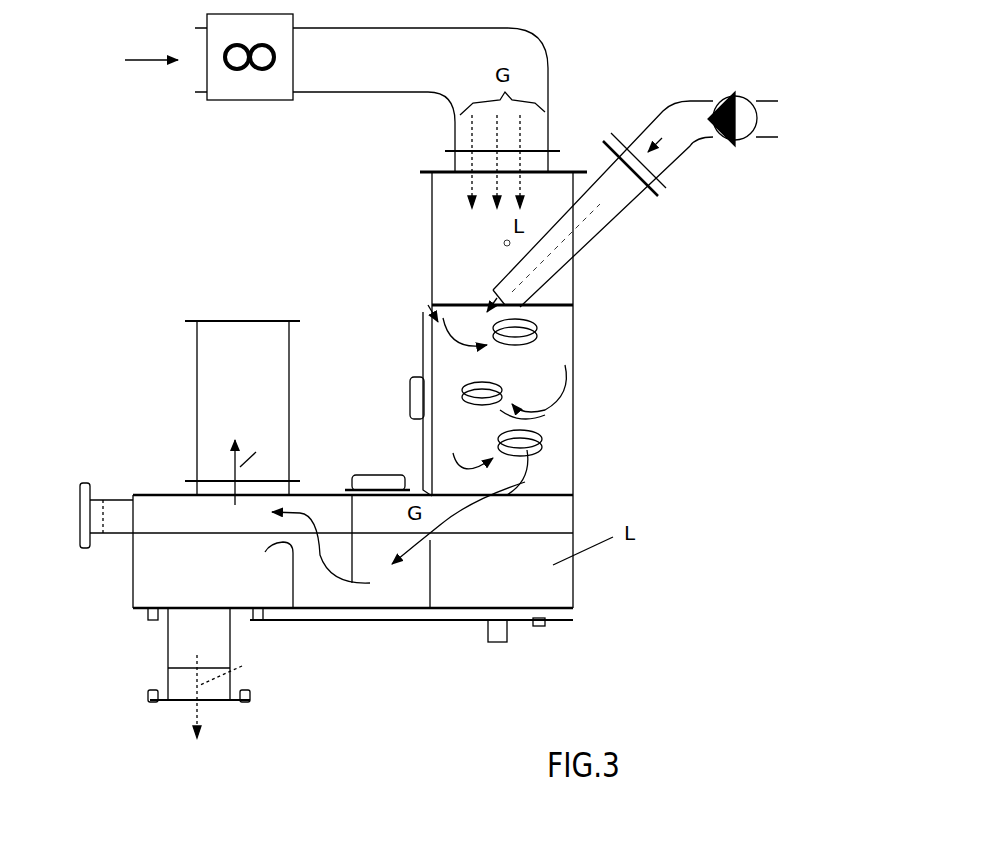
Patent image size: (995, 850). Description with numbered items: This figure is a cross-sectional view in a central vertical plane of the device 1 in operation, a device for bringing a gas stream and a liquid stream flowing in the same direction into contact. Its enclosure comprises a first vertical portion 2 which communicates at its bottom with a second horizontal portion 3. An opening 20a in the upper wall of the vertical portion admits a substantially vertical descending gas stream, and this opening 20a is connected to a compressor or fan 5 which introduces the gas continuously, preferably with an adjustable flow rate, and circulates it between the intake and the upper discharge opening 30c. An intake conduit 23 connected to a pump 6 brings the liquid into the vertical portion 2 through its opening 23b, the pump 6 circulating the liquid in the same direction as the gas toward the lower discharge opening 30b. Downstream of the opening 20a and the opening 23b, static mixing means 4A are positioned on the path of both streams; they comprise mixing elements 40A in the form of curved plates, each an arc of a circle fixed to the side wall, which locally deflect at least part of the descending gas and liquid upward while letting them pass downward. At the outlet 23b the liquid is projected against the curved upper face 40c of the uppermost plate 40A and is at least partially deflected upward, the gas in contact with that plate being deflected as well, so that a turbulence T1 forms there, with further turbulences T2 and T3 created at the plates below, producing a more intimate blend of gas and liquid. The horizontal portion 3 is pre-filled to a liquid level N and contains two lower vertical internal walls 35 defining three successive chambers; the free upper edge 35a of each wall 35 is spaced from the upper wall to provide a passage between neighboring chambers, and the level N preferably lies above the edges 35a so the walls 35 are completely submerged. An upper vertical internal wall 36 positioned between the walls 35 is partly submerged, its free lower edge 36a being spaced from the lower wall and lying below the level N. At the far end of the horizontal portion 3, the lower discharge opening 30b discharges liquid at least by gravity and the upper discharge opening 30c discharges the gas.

The device 1 is at (612, 470).
The first vertical portion 2 is at (596, 276).
The second horizontal portion 3 is at (125, 616).
The static mixing means 4A is at (430, 298).
The fan 5 is at (263, 97).
The pump 6 is at (736, 143).
The opening 20a is at (463, 168).
The intake conduit 23 is at (586, 244).
The opening 23b is at (492, 292).
The lower discharge opening 30b is at (180, 615).
The upper discharge opening 30c is at (197, 488).
The lower vertical internal wall 35 is at (292, 572).
The free upper edge 35a is at (268, 550).
The upper vertical internal wall 36 is at (355, 505).
The free lower edge 36a is at (355, 585).
The mixing element 40A is at (565, 365).
The curved upper face 40c is at (455, 312).
The liquid level N is at (152, 540).
The turbulence T1 is at (540, 328).
The turbulence T2 is at (463, 383).
The turbulence T3 is at (542, 440).